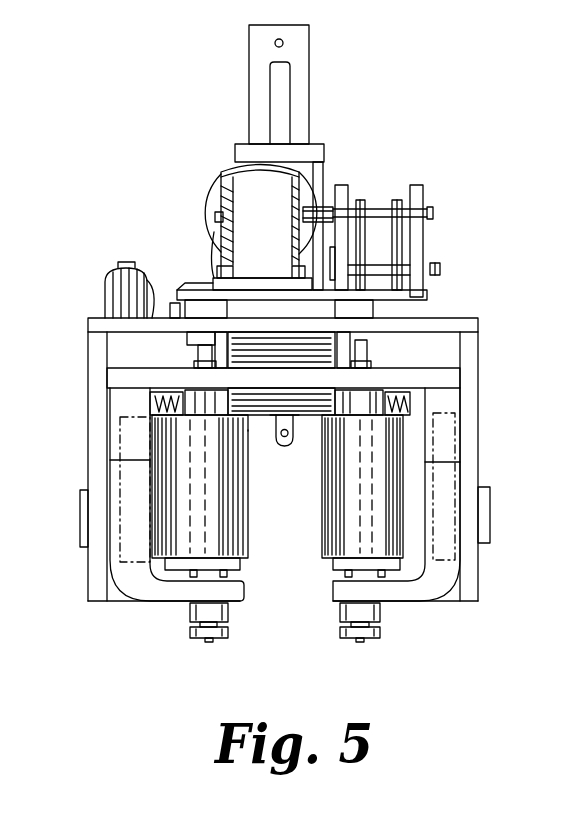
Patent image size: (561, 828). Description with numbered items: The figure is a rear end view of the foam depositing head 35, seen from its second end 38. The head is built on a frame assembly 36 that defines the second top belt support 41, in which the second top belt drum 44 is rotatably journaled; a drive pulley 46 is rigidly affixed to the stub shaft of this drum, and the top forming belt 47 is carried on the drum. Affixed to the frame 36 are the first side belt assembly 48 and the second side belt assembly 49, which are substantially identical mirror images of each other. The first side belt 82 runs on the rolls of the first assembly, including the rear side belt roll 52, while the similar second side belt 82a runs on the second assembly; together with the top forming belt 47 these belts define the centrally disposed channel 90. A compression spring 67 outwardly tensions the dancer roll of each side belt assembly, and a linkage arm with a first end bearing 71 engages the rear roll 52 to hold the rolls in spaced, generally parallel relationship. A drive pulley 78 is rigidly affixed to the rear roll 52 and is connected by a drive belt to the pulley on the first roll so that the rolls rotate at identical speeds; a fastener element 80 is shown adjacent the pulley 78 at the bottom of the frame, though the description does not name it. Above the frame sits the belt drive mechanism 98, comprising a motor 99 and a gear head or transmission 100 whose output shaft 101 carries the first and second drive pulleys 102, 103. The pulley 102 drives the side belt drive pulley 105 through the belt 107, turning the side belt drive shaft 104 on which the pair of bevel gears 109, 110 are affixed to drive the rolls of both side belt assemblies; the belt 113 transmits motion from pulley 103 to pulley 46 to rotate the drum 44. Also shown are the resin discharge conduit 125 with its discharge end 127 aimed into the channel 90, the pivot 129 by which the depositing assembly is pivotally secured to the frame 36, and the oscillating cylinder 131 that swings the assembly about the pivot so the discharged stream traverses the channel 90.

The foam depositing head 35 is at (104, 212).
The frame assembly 36 is at (89, 328).
The second end 38 is at (445, 322).
The second top belt support 41 is at (190, 339).
The second top belt drum 44 is at (200, 360).
The drive pulley 46 is at (370, 356).
The top forming belt 47 is at (370, 348).
The first side belt assembly 48 is at (426, 439).
The second side belt assembly 49 is at (143, 445).
The rear side belt roll 52 is at (332, 568).
The compression spring 67 is at (410, 400).
The first end bearing 71 is at (370, 397).
The drive pulley 78 is at (350, 640).
The nut 80 is at (385, 632).
The first side belt 82 is at (332, 520).
The second side belt 82a is at (230, 540).
The channel 90 is at (303, 525).
The belt drive mechanism 98 is at (217, 164).
The motor 99 is at (210, 197).
The gear head or transmission 100 is at (252, 240).
The output shaft 101 is at (385, 214).
The first drive pulley 102 is at (397, 210).
The second drive pulley 103 is at (372, 212).
The side belt drive shaft 104 is at (443, 269).
The side belt drive pulley 105 is at (382, 212).
The belt 107 is at (402, 231).
The bevel gear 109 is at (304, 237).
The bevel gear 110 is at (210, 264).
The belt 113 is at (390, 250).
The resin discharge conduit 125 is at (280, 433).
The discharge end 127 is at (288, 440).
The pivot 129 is at (215, 290).
The oscillating cylinder 131 is at (103, 292).